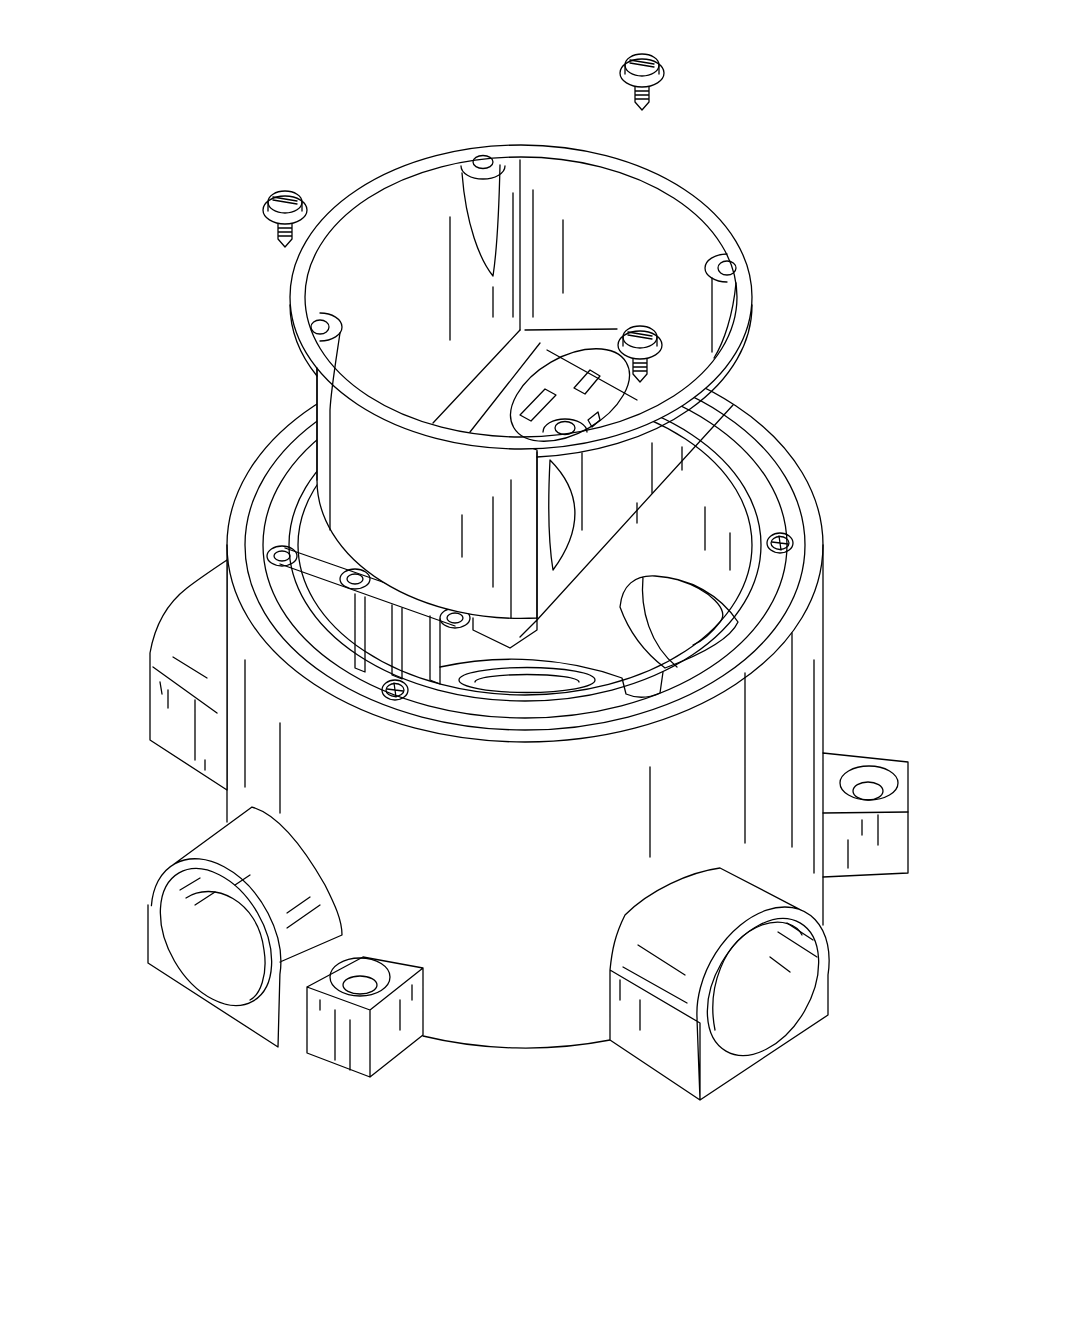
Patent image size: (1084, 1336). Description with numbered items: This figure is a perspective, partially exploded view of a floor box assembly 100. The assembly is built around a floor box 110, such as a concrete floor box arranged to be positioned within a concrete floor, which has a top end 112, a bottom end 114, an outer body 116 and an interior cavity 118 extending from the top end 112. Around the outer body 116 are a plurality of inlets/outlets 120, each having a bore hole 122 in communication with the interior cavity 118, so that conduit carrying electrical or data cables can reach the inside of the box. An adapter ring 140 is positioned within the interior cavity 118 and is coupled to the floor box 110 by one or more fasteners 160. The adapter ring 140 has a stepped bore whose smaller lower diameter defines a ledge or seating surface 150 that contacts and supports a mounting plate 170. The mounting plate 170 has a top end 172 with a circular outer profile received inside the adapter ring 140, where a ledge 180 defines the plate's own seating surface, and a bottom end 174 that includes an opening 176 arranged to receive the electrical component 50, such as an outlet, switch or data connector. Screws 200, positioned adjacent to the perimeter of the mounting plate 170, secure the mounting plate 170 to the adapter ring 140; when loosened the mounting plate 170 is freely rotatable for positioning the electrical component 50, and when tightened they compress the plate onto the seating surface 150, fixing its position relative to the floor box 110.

The floor box assembly 100 is at (840, 40).
The floor box 110 is at (826, 622).
The top end 112 is at (236, 508).
The bottom end 114 is at (500, 1032).
The outer body 116 is at (800, 737).
The interior cavity 118 is at (291, 409).
The inlet/outlet 120 is at (173, 714).
The bore hole 122 is at (168, 893).
The adapter ring 140 is at (790, 512).
The seating surface 150 is at (733, 507).
The fastener 160 is at (396, 700).
The mounting plate 170 is at (683, 192).
The top end 172 is at (733, 232).
The bottom end 174 is at (372, 540).
The opening 176 is at (490, 405).
The ledge 180 is at (752, 280).
The screw 200 is at (279, 190).
The electrical component 50 is at (560, 390).